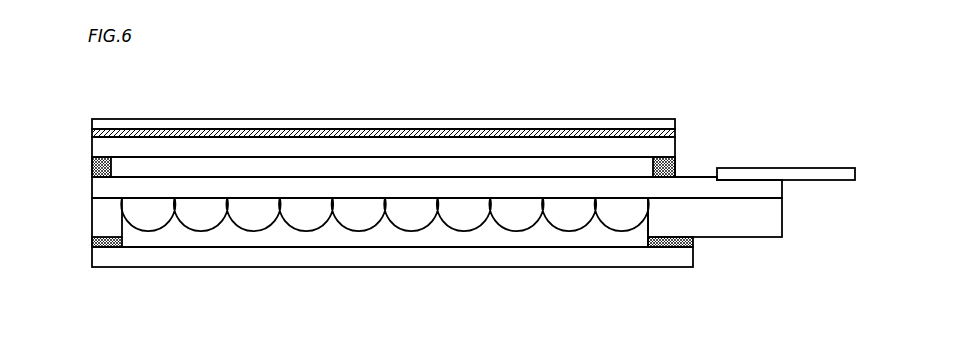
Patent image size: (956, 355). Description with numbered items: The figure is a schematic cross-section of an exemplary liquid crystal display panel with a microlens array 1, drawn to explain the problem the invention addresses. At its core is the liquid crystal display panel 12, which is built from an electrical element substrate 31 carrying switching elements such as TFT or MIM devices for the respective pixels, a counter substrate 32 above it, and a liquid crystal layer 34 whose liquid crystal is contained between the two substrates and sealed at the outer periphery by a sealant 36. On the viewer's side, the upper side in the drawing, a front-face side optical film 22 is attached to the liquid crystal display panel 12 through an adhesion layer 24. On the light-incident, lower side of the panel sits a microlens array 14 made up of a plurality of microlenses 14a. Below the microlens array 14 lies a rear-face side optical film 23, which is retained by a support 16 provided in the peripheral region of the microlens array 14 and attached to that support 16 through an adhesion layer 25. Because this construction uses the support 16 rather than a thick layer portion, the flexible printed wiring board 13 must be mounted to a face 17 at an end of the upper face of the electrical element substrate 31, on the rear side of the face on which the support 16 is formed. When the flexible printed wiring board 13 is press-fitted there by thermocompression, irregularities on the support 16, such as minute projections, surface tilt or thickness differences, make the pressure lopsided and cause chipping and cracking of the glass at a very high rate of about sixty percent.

The liquid crystal display panel with a microlens array 1 is at (679, 93).
The liquid crystal display panel 12 is at (398, 140).
The flexible printed wiring board 13 is at (797, 177).
The microlens array 14 is at (392, 252).
The microlens 14a is at (307, 218).
The support 16 is at (720, 233).
The face 17 is at (752, 181).
The front-face side optical film 22 is at (530, 119).
The rear-face side optical film 23 is at (510, 258).
The adhesion layer 24 is at (90, 132).
The adhesion layer 25 is at (670, 247).
The electrical element substrate 31 is at (414, 188).
The counter substrate 32 is at (95, 147).
The liquid crystal layer 34 is at (117, 163).
The sealant 36 is at (107, 157).